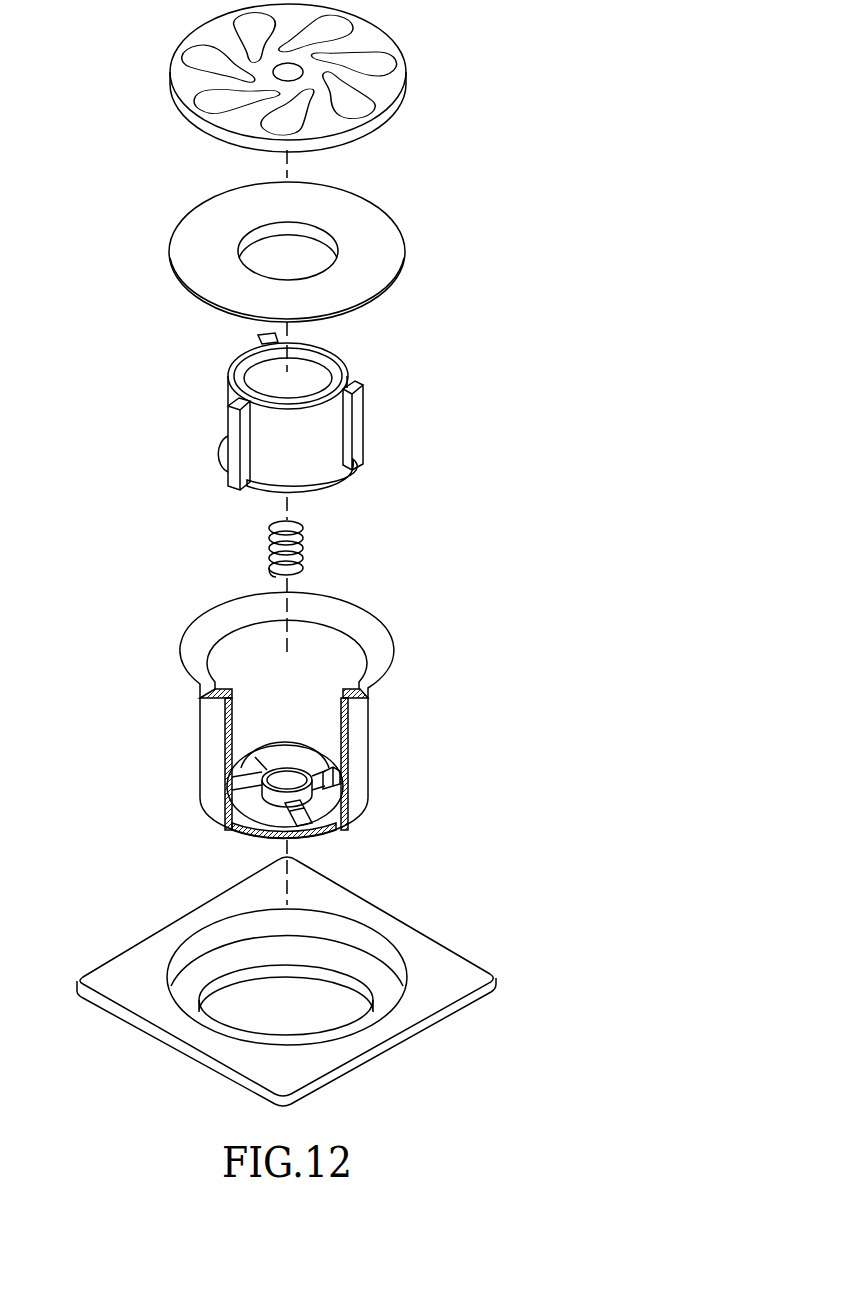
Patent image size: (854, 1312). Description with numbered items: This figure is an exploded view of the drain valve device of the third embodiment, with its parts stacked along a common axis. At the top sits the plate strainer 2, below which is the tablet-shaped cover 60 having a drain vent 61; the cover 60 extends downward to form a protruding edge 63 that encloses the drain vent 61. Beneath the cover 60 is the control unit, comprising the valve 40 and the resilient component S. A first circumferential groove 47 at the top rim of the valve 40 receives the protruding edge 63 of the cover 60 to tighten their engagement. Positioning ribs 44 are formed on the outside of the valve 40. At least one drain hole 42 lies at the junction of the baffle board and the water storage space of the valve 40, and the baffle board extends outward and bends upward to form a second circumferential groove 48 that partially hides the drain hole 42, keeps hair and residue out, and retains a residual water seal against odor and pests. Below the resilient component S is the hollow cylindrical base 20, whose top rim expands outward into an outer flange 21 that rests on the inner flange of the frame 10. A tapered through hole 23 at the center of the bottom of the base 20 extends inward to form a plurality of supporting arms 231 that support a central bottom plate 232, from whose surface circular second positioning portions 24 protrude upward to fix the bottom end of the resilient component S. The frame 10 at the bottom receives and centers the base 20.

The plate strainer 2 is at (387, 73).
The cover 60 is at (297, 252).
The drain vent 61 is at (327, 233).
The protruding edge 63 is at (251, 241).
The valve 40 is at (270, 423).
The first circumferential groove 47 is at (340, 376).
The positioning ribs 44 is at (364, 412).
The drain hole 42 is at (312, 481).
The second circumferential groove 48 is at (330, 485).
The resilient component S is at (304, 545).
The outer flange 21 is at (368, 635).
The base 20 is at (289, 728).
The second positioning portions 24 is at (276, 776).
The through hole 23 is at (298, 816).
The central bottom plate 232 is at (308, 794).
The supporting arms 231 is at (288, 804).
The frame 10 is at (460, 948).